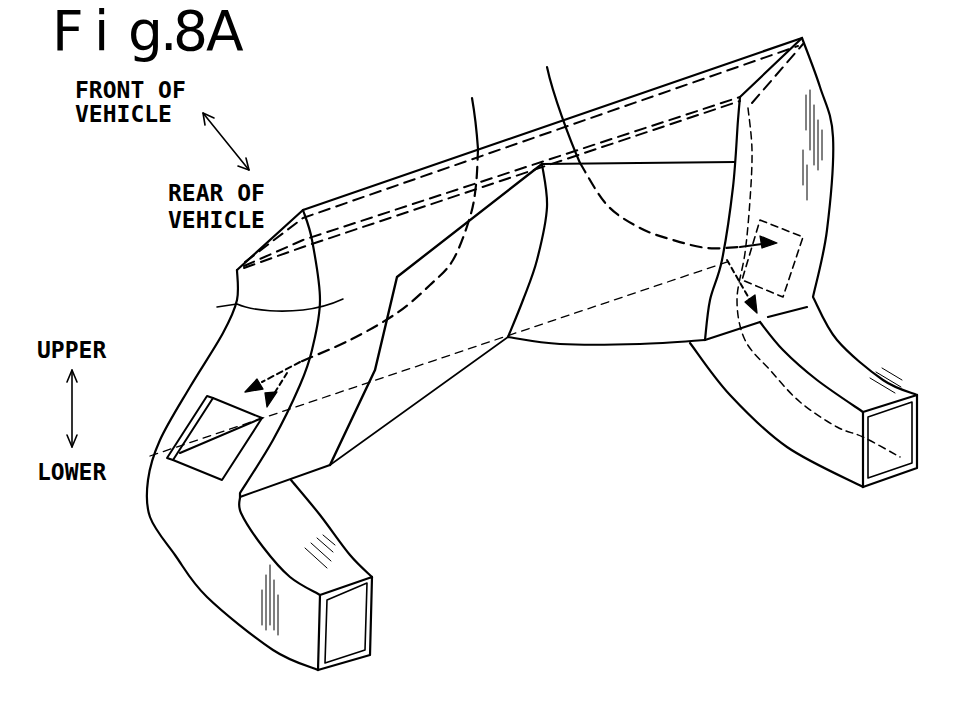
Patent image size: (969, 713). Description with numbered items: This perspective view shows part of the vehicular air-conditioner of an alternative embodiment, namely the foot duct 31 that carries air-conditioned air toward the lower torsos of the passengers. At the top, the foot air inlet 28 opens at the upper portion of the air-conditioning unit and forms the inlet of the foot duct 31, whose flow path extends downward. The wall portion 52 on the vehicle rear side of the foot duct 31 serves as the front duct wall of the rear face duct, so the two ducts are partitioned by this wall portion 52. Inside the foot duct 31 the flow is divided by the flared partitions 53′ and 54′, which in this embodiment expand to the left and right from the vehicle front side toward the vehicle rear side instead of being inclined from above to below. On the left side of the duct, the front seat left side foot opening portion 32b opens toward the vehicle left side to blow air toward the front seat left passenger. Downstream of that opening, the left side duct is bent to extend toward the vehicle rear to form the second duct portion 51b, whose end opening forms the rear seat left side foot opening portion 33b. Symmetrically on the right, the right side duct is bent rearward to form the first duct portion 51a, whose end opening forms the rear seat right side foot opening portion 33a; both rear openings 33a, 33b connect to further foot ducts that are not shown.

The foot air inlet 28 is at (596, 130).
The foot duct 31 is at (830, 215).
The front seat left side foot opening portion 32b is at (190, 465).
The rear seat right side foot opening portion 33a is at (888, 460).
The rear seat left side foot opening portion 33b is at (347, 622).
The first duct portion 51a is at (783, 423).
The second duct portion 51b is at (233, 583).
The wall portion 52 is at (264, 315).
The flared partition 53′ is at (623, 327).
The flared partition 54′ is at (433, 380).